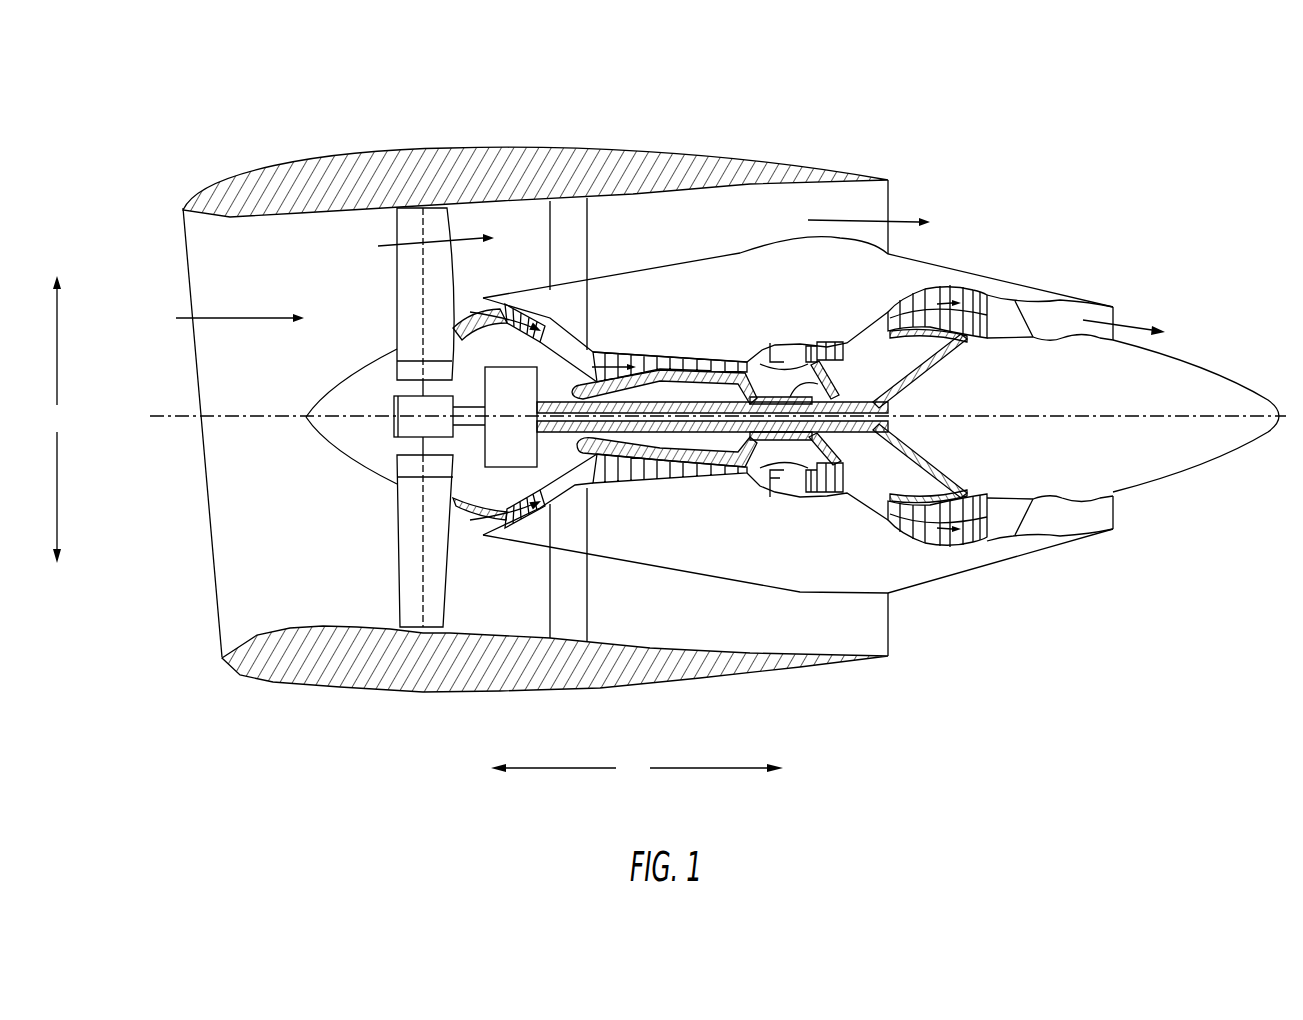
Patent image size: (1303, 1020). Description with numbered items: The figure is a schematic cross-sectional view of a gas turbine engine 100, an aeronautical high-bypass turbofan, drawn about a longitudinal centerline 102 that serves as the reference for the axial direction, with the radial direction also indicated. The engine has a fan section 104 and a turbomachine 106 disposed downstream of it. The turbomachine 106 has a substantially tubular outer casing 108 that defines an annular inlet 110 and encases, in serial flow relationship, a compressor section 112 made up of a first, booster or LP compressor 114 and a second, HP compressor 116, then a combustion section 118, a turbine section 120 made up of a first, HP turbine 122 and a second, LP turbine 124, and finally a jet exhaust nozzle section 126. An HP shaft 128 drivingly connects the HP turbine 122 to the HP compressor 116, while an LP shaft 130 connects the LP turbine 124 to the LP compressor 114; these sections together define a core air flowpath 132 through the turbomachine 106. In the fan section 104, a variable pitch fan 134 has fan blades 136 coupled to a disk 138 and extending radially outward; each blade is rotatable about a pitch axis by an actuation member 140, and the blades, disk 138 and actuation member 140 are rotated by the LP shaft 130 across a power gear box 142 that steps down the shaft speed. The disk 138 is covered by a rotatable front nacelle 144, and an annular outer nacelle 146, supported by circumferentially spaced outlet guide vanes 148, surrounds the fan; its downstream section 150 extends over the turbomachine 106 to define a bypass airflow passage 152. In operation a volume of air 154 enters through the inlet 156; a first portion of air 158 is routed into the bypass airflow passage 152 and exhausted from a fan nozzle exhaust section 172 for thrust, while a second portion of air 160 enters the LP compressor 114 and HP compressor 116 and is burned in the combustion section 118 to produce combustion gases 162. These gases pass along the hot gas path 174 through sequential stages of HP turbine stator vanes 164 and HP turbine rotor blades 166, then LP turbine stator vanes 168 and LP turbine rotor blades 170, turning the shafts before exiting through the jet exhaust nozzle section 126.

The gas turbine engine 100 is at (1030, 163).
The longitudinal centerline 102 is at (1057, 416).
The fan section 104 is at (307, 345).
The turbomachine 106 is at (757, 310).
The outer casing 108 is at (743, 582).
The annular inlet 110 is at (494, 522).
The compressor section 112 is at (630, 338).
The LP compressor 114 is at (558, 497).
The HP compressor 116 is at (616, 474).
The combustion section 118 is at (780, 500).
The turbine section 120 is at (855, 318).
The HP turbine 122 is at (855, 490).
The LP turbine 124 is at (972, 547).
The jet exhaust nozzle section 126 is at (1033, 522).
The HP shaft 128 is at (823, 378).
The LP shaft 130 is at (912, 390).
The core air flowpath 132 is at (862, 512).
The variable pitch fan 134 is at (365, 468).
The fan blades 136 is at (395, 567).
The disk 138 is at (417, 372).
The actuation member 140 is at (392, 402).
The power gear box 142 is at (530, 387).
The rotatable front nacelle 144 is at (317, 437).
The outer nacelle 146 is at (520, 449).
The outlet guide vanes 148 is at (588, 227).
The downstream section 150 is at (818, 176).
The bypass airflow passage 152 is at (718, 246).
The volume of air 154 is at (238, 312).
The inlet 156 is at (218, 634).
The first portion of air 158 is at (410, 236).
The second portion of air 160 is at (483, 299).
The combustion gases 162 is at (833, 342).
The HP turbine stator vanes 164 is at (803, 492).
The HP turbine rotor blades 166 is at (898, 445).
The LP turbine stator vanes 168 is at (860, 508).
The LP turbine rotor blades 170 is at (908, 535).
The fan nozzle exhaust section 172 is at (877, 205).
The hot gas path 174 is at (877, 318).